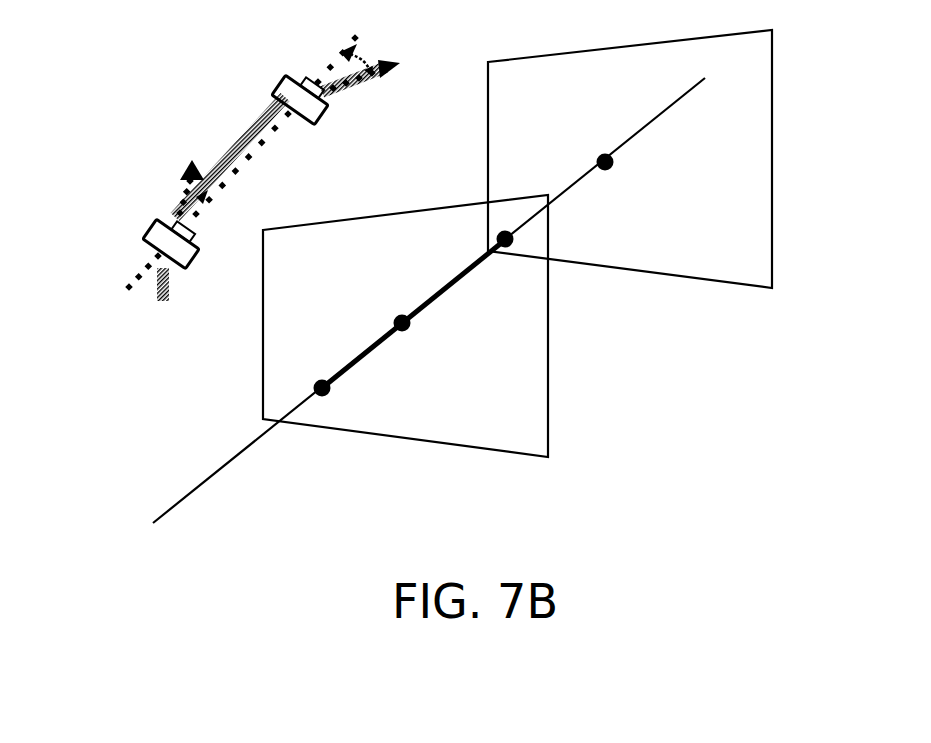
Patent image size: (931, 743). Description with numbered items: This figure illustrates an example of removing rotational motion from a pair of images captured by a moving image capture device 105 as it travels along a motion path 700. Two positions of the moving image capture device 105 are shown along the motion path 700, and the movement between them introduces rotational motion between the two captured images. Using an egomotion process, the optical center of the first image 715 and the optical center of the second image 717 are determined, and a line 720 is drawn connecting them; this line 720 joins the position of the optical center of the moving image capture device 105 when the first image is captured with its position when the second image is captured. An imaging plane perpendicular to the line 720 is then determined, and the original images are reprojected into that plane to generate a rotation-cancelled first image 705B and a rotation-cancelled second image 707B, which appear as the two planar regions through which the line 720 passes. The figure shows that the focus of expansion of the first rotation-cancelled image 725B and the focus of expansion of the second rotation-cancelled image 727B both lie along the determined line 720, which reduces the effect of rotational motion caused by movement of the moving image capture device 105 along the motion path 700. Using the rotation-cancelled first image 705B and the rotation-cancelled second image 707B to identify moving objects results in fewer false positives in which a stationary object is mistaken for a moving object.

The motion path 700 is at (222, 140).
The moving image capture device 105 is at (140, 238).
The line 720 is at (128, 268).
The optical center of the first image 715 is at (316, 384).
The optical center of the second image 717 is at (495, 230).
The focus of expansion of the first rotation-cancelled image 725B is at (392, 312).
The focus of expansion of the second rotation-cancelled image 727B is at (596, 156).
The rotation-cancelled first image 705B is at (405, 326).
The rotation-cancelled second image 707B is at (630, 159).